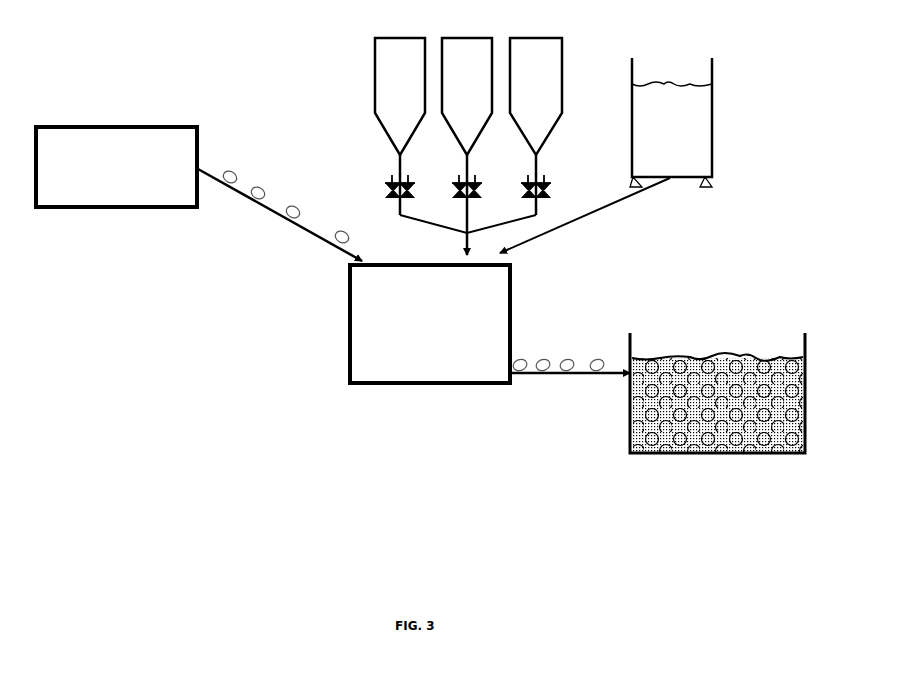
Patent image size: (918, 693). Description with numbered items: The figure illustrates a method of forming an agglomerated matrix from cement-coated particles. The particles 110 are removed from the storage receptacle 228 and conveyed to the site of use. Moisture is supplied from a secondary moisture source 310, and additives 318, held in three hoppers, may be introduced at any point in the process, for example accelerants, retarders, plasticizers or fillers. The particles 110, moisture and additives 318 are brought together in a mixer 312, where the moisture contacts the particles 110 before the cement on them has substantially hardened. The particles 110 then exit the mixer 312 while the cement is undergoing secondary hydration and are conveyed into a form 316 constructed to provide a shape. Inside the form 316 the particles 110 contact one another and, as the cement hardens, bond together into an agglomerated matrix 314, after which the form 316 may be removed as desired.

The storage receptacle 228 is at (80, 125).
The particles 110 is at (240, 177).
The additives 318 is at (468, 146).
The secondary moisture source 310 is at (713, 107).
The mixer 312 is at (512, 292).
The form 316 is at (632, 343).
The agglomerated matrix 314 is at (655, 462).